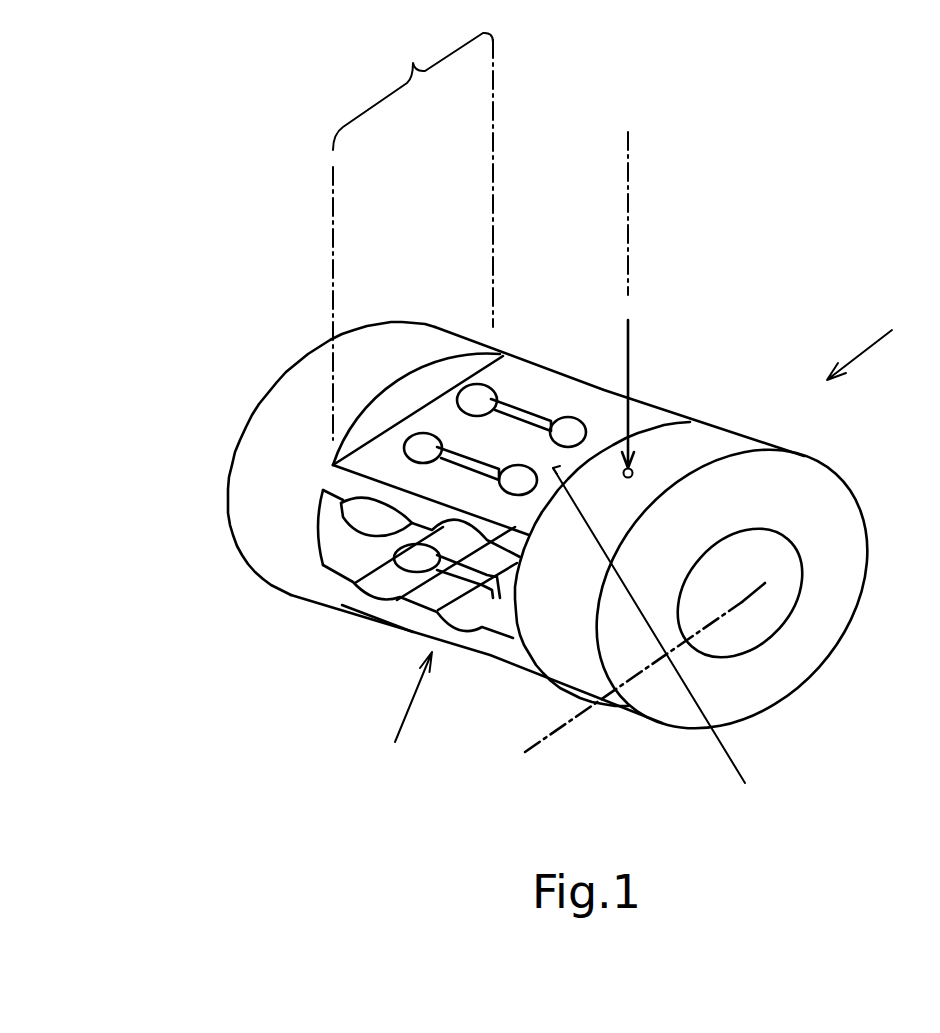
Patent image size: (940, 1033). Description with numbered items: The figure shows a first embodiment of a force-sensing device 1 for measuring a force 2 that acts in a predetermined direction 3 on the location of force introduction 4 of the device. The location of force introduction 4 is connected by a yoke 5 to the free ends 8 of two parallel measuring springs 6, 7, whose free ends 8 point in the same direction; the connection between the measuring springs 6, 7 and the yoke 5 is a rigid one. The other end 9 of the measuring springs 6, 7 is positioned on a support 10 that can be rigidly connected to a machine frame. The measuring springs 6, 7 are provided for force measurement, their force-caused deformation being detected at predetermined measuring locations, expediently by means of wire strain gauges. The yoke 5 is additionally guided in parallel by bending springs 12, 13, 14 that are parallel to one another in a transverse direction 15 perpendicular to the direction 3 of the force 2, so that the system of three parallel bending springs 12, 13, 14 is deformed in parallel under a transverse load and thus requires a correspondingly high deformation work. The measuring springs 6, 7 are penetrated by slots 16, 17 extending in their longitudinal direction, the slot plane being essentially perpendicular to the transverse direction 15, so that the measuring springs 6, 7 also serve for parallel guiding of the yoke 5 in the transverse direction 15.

The force-sensing device 1 is at (875, 337).
The force 2 is at (640, 394).
The predetermined direction 3 is at (628, 152).
The location of force introduction 4 is at (632, 471).
The yoke 5 is at (820, 490).
The measuring spring 6 is at (413, 229).
The measuring spring 7 is at (405, 716).
The free ends 8 is at (662, 638).
The other end 9 is at (403, 392).
The support 10 is at (280, 493).
The bending spring 12 is at (385, 465).
The bending spring 13 is at (490, 442).
The bending spring 14 is at (520, 390).
The transverse direction 15 is at (743, 600).
The slot 16 is at (427, 448).
The slot 17 is at (477, 398).